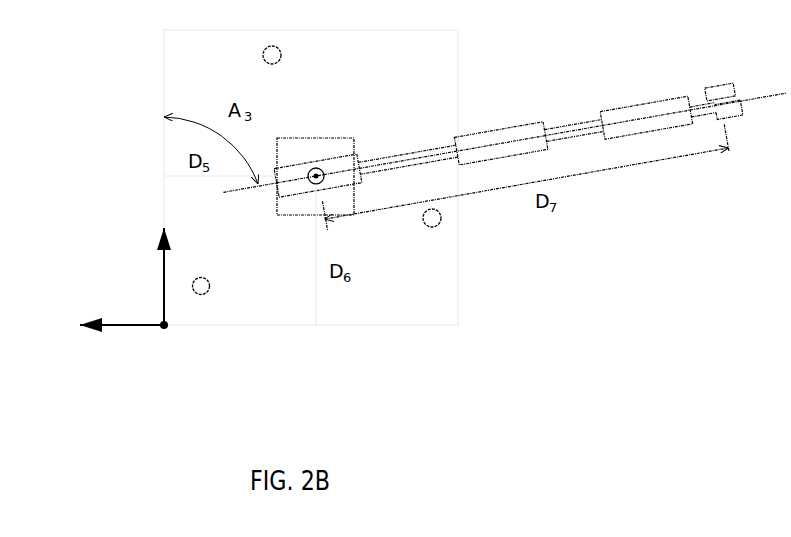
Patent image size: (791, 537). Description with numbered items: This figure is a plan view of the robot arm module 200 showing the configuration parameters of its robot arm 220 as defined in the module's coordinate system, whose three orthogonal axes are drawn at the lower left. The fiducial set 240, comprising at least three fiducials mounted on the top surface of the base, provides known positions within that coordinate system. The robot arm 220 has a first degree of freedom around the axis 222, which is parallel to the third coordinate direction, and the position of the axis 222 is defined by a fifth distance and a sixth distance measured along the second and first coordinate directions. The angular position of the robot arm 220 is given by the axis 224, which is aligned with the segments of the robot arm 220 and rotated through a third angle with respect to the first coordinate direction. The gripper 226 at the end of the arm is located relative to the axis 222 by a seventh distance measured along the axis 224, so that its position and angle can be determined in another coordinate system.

The robot arm module 200 is at (138, 69).
The robot arm 220 is at (648, 143).
The axis 222 is at (318, 163).
The axis 224 is at (766, 94).
The gripper 226 is at (709, 105).
The fiducial set 240 is at (178, 309).